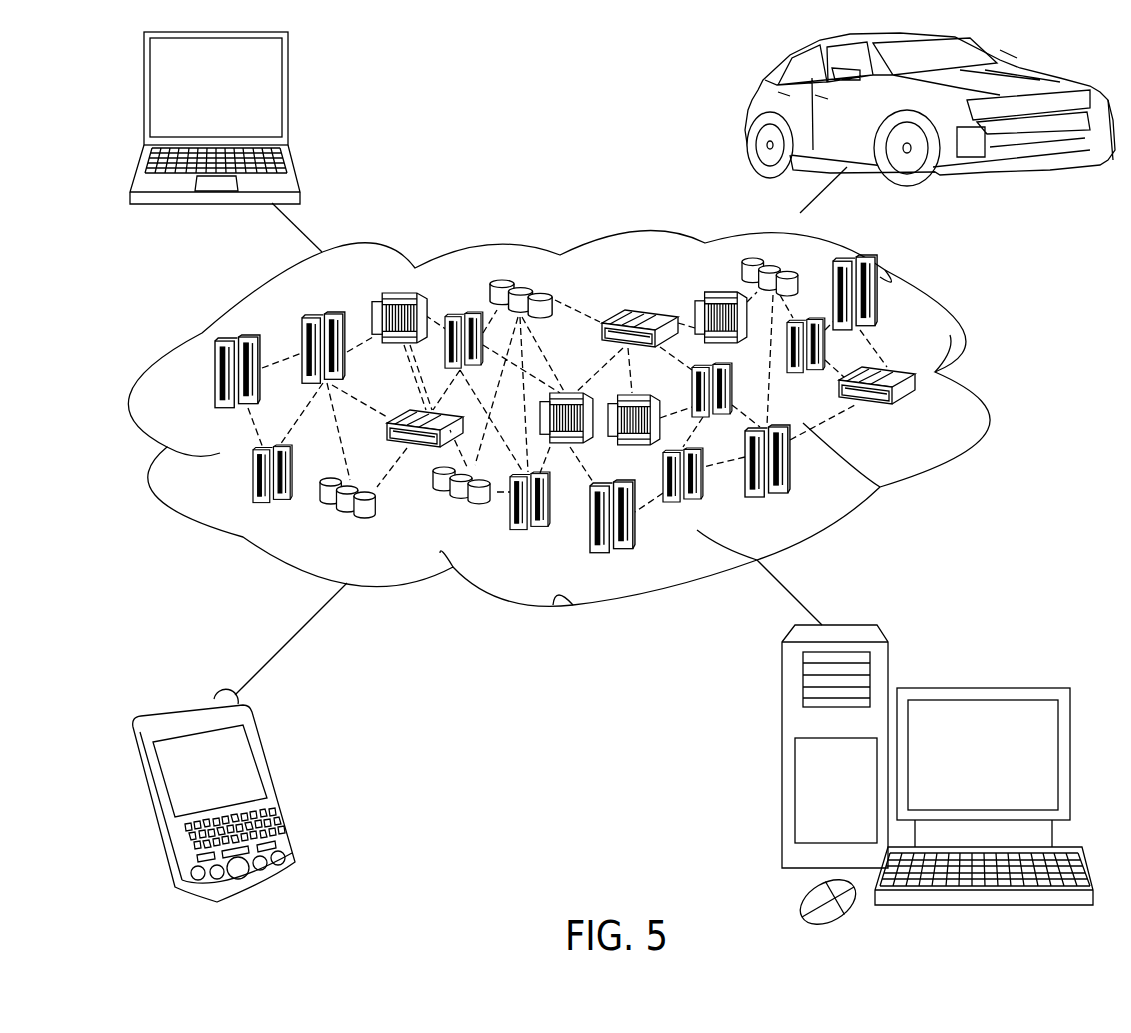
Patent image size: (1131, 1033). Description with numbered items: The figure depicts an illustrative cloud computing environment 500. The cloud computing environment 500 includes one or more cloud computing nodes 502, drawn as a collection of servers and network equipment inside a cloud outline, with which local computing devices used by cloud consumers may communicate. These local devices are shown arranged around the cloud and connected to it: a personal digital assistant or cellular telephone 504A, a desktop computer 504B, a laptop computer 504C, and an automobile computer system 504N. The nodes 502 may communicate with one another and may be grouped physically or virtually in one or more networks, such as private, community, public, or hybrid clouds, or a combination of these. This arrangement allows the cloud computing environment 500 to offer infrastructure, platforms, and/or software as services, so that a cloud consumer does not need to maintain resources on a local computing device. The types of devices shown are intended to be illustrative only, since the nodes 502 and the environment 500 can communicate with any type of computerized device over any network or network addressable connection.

The cloud computing environment 500 is at (982, 383).
The cloud computing nodes 502 is at (922, 415).
The personal digital assistant or cellular telephone 504A is at (278, 787).
The desktop computer 504B is at (980, 687).
The laptop computer 504C is at (288, 97).
The automobile computer system 504N is at (752, 110).